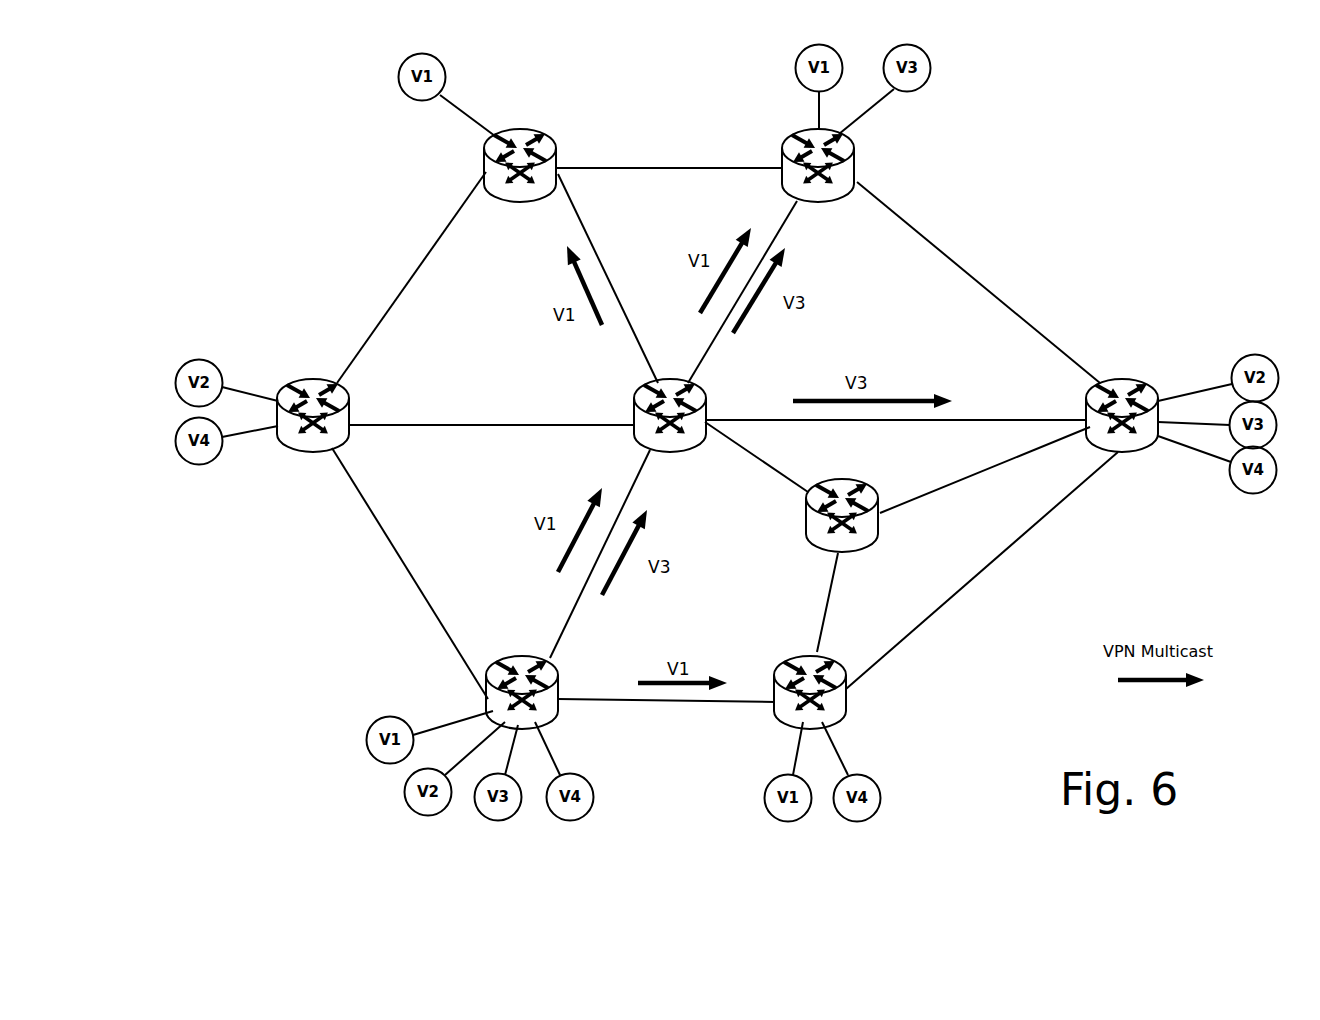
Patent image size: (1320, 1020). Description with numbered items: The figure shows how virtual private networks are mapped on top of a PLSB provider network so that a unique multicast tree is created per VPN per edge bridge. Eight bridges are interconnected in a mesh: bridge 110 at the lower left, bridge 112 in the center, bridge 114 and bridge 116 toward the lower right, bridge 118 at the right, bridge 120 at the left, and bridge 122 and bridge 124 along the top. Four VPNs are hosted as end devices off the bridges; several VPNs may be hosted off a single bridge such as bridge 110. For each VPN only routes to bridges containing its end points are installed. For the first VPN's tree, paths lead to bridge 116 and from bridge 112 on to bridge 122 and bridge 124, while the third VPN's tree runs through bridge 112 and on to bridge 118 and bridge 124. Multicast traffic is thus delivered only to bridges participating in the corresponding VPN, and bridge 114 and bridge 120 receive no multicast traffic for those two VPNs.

The bridge 110 is at (555, 660).
The bridge 112 is at (703, 393).
The bridge 114 is at (843, 478).
The bridge 116 is at (835, 655).
The bridge 118 is at (1139, 374).
The bridge 120 is at (302, 380).
The bridge 122 is at (550, 142).
The bridge 124 is at (853, 158).